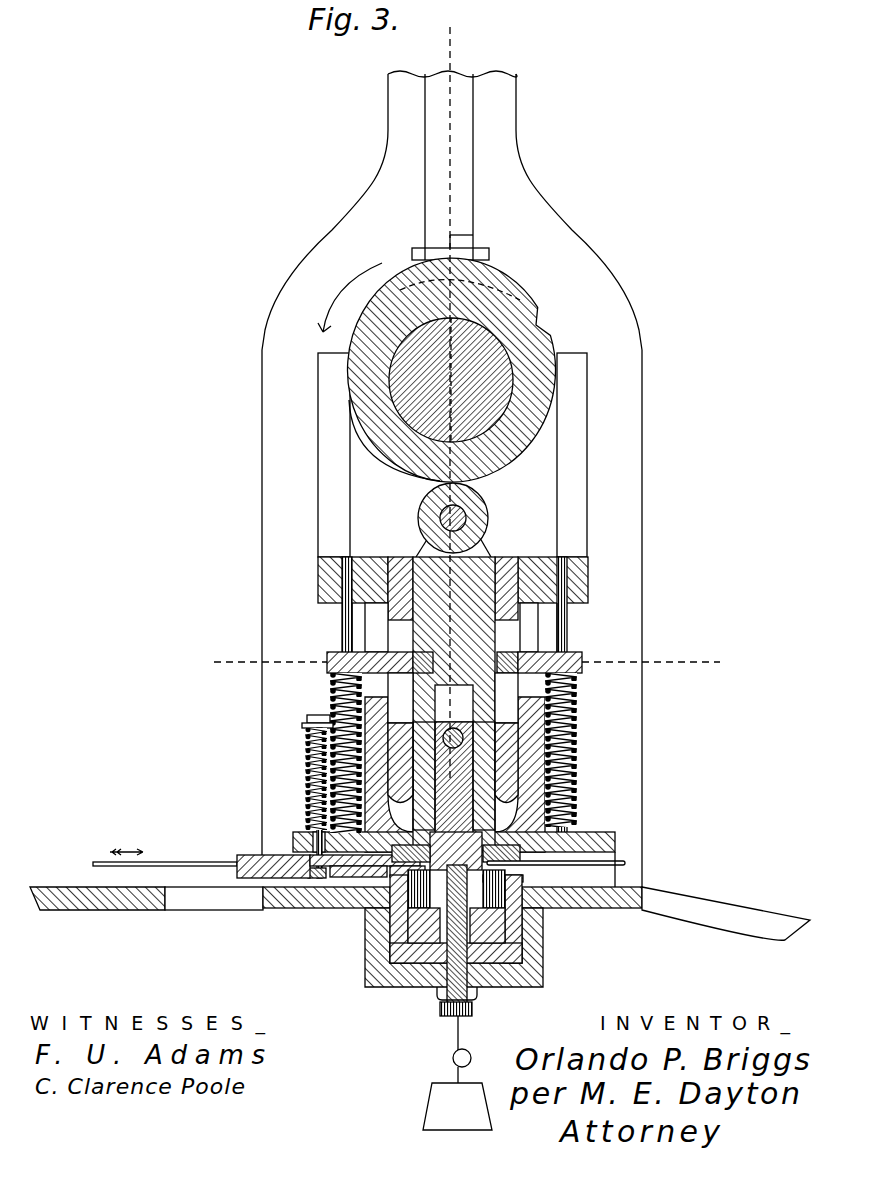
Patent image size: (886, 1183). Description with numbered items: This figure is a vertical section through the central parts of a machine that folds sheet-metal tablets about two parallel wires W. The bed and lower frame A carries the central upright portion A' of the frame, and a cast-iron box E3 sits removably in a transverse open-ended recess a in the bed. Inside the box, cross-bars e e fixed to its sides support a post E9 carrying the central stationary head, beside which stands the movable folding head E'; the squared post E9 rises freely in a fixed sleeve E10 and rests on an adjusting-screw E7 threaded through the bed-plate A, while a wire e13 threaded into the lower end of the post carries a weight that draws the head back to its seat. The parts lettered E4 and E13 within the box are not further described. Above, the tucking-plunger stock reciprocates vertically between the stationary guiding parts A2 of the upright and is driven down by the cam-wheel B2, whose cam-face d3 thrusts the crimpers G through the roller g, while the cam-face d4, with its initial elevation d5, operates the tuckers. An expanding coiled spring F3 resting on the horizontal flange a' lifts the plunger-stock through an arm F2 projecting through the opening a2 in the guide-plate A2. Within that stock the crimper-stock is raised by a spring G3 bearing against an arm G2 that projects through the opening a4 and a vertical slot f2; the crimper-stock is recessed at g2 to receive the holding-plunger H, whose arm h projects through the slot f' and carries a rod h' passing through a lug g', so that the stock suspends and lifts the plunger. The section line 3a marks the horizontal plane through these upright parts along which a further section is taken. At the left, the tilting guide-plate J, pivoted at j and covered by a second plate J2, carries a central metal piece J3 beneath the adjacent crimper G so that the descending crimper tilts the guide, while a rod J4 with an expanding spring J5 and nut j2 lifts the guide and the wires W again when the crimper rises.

The central upright portion of the frame A' is at (452, 479).
The initial elevation of cam-face d5 is at (394, 268).
The peripheral cam-face d4 is at (508, 283).
The peripheral cam-face d3 is at (528, 293).
The cam B2 is at (452, 370).
The roller g is at (458, 520).
The guiding plate A2 is at (453, 602).
The folding head E' is at (400, 588).
The vertical slot f' is at (506, 588).
The horizontal flange a' is at (508, 704).
The opening a4 is at (370, 627).
The opening a2 is at (538, 627).
The arm G2 is at (410, 662).
The arm F2 is at (561, 662).
The section line 3a is at (465, 662).
The expanding coiled spring G3 is at (330, 690).
The expanding coiled spring F3 is at (572, 750).
The vertical slot f2 is at (453, 698).
The rod h' is at (453, 763).
The recess g2 is at (454, 703).
The arm h is at (454, 786).
The lug g' is at (454, 776).
The nut j2 is at (314, 713).
The rod J4 is at (319, 783).
The expanding spring J5 is at (306, 751).
The pivot j is at (270, 854).
The tilting guide-plate J is at (165, 852).
The second plate J2 is at (292, 856).
The central metal piece J3 is at (407, 872).
The holding-plunger H is at (456, 851).
The crimpers G is at (456, 853).
The wires W is at (630, 863).
The cast-iron box E3 is at (523, 879).
The transverse open-ended recess a is at (591, 869).
The bed and lower frame A is at (420, 937).
The fixed sleeve E10 is at (543, 953).
The cup bottom E13 is at (456, 953).
The cross-bars e is at (456, 889).
The blocks E4 is at (456, 925).
The post E9 is at (452, 934).
The adjusting-screw E7 is at (468, 1002).
The suspending wire e13 is at (457, 1073).